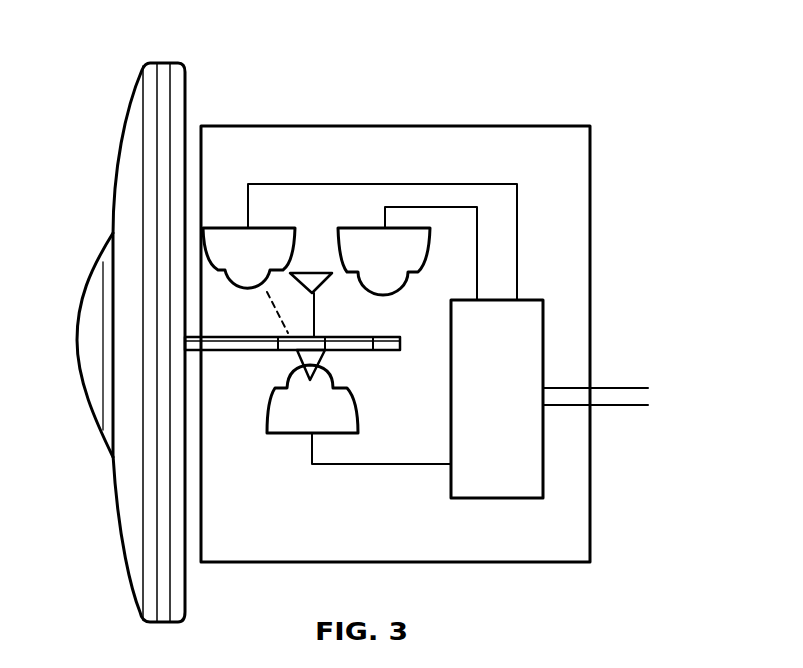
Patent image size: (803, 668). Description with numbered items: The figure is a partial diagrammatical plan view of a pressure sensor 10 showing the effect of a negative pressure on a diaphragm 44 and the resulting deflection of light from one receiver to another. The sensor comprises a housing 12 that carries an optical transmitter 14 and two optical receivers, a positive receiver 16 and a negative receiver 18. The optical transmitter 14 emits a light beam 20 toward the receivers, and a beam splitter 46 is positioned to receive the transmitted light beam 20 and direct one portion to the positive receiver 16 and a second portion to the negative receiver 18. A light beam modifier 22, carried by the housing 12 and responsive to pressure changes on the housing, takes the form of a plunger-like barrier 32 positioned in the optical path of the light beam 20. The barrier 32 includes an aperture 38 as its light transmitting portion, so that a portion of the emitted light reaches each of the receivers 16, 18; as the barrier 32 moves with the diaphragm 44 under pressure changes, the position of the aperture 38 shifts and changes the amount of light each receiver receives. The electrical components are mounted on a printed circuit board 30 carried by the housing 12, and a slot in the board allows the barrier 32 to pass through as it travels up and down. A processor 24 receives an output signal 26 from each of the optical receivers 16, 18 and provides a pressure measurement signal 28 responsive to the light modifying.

The pressure sensor 10 is at (532, 75).
The housing 12 is at (166, 87).
The optical transmitter 14 is at (300, 407).
The positive receiver 16 is at (353, 237).
The negative receiver 18 is at (238, 238).
The light beam 20 is at (316, 305).
The light beam modifier 22 is at (393, 353).
The processor 24 is at (512, 421).
The output signal 26 is at (458, 206).
The pressure measurement signal 28 is at (612, 387).
The printed circuit board 30 is at (555, 148).
The barrier 32 is at (240, 345).
The aperture 38 is at (282, 320).
The diaphragm 44 is at (97, 390).
The beam splitter 46 is at (313, 280).